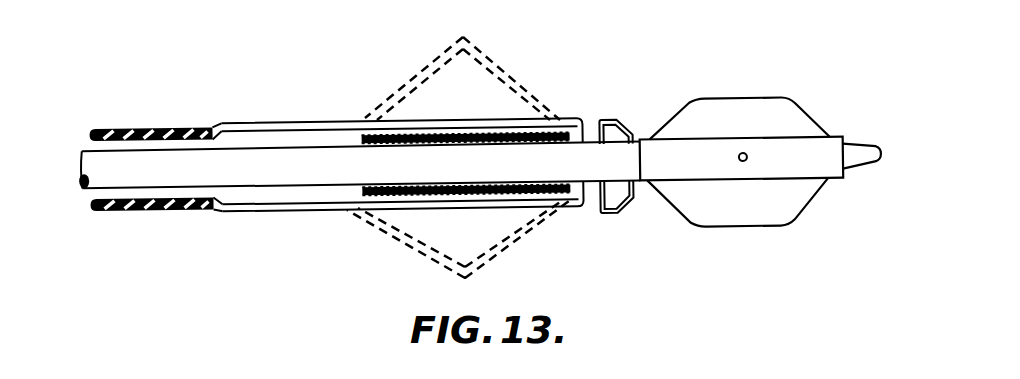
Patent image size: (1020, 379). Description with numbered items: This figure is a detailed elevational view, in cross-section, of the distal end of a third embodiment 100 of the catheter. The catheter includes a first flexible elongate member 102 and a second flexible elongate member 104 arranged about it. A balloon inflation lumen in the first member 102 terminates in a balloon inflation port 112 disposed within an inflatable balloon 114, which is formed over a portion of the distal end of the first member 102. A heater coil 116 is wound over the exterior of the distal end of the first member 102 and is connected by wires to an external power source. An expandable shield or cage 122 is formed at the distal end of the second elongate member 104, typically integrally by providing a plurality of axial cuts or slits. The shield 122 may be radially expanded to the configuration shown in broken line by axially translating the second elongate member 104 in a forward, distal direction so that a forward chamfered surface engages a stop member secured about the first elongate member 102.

The third embodiment of the catheter 100 is at (326, 84).
The first flexible elongate member 102 is at (311, 172).
The second flexible elongate member 104 is at (163, 208).
The balloon inflation port 112 is at (746, 161).
The inflatable balloon 114 is at (728, 227).
The heater coil 116 is at (441, 196).
The expandable shield or cage 122 is at (482, 120).